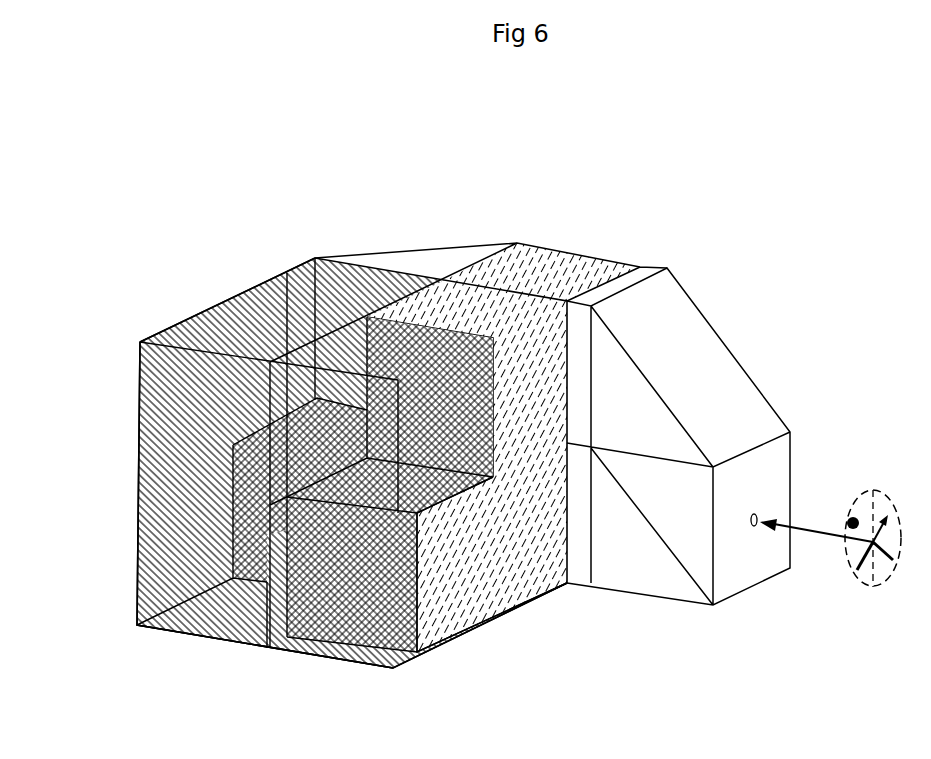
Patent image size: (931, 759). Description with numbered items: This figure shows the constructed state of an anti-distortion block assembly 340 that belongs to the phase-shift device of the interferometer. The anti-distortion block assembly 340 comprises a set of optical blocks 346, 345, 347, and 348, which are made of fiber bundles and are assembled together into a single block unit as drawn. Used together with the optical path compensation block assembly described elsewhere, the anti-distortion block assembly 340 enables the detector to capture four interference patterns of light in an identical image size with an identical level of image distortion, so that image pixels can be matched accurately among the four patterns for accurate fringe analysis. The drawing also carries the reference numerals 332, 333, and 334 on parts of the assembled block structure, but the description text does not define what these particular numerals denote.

The upper block 332 is at (467, 297).
The prism block 333 is at (567, 585).
The cover plate 334 is at (283, 282).
The anti-distortion block assembly 340 is at (92, 338).
The optical block 345 is at (452, 500).
The optical block 346 is at (317, 657).
The optical block 347 is at (158, 628).
The optical block 348 is at (195, 319).